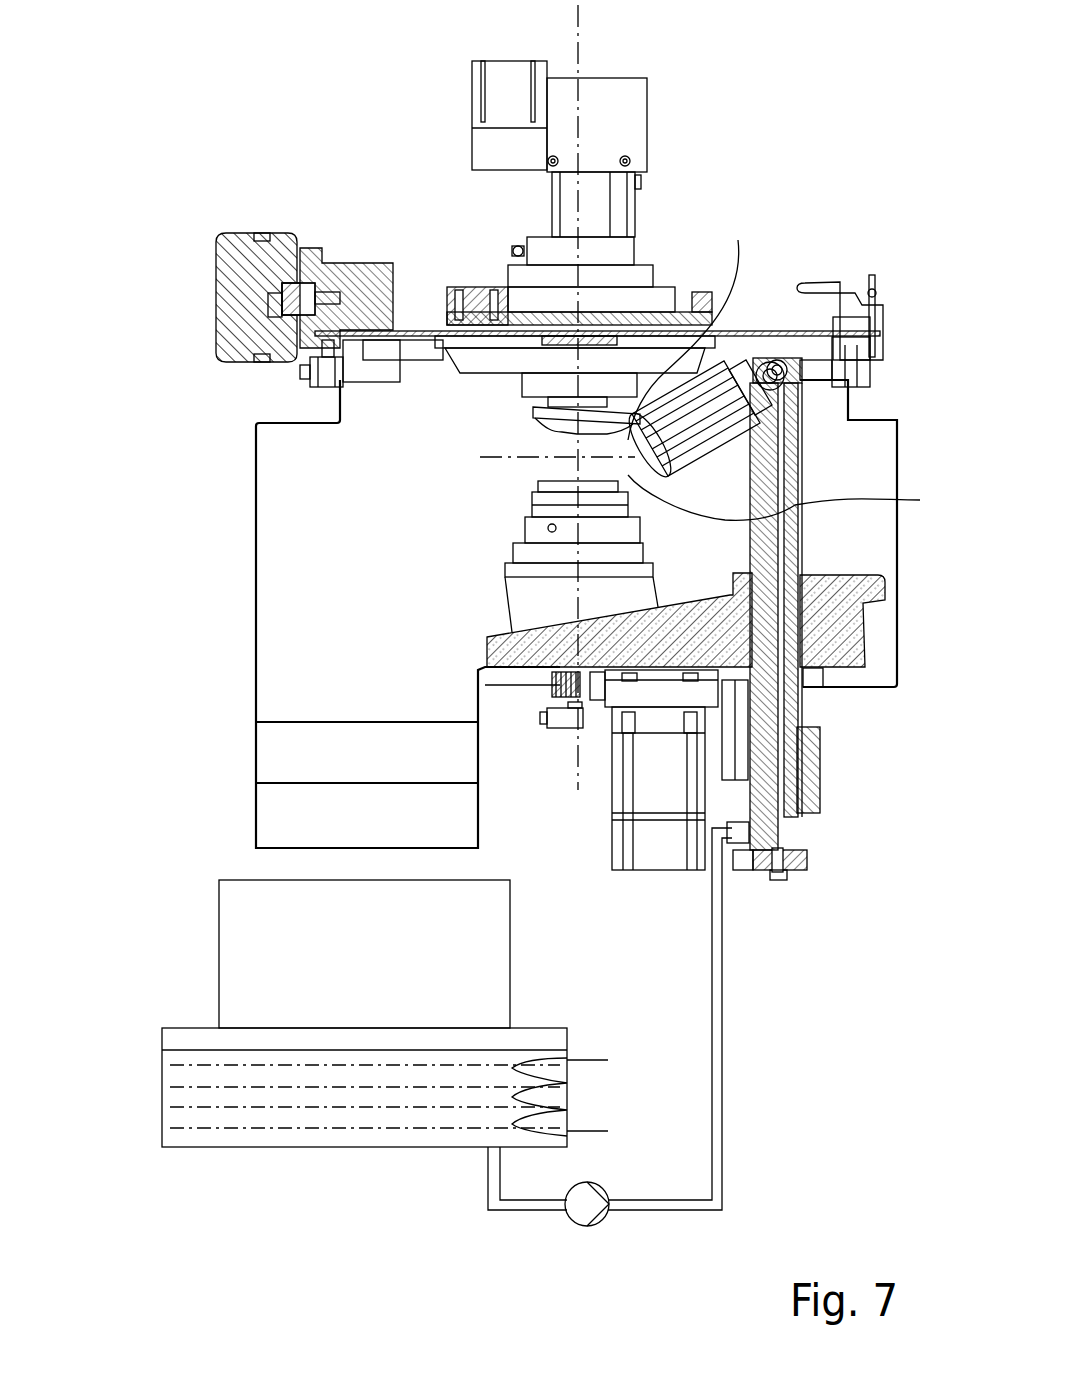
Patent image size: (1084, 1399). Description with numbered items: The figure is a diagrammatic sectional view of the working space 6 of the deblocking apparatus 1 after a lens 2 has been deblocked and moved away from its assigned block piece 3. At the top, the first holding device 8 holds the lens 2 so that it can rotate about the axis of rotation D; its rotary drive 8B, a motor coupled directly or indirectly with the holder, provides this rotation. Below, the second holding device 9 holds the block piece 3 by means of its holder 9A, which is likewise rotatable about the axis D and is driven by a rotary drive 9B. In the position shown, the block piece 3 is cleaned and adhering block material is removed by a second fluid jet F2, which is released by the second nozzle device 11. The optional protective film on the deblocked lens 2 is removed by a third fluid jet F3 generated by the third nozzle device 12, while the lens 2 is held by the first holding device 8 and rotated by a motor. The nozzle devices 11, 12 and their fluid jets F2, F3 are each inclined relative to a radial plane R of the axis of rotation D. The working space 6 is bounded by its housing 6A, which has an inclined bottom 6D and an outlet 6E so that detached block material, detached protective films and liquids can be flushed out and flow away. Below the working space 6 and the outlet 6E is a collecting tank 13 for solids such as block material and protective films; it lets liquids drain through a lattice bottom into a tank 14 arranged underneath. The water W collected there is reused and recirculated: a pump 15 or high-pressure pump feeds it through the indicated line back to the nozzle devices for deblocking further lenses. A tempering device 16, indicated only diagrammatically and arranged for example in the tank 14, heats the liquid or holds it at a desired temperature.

The apparatus 1 is at (176, 177).
The lens 2 is at (567, 411).
The block piece 3 is at (540, 487).
The working space 6 is at (401, 605).
The housing 6A is at (897, 442).
The inclined bottom 6D is at (650, 605).
The outlet 6E is at (310, 752).
The first holding device 8 is at (540, 207).
The rotary drive 8B is at (490, 147).
The second holding device 9 is at (495, 555).
The holder 9A is at (540, 513).
The rotary drive 9B is at (653, 790).
The second nozzle device 11 is at (690, 400).
The third nozzle device 12 is at (757, 453).
The collecting tank 13 is at (220, 993).
The tank 14 is at (163, 1100).
The pump 15 is at (575, 1209).
The tempering device 16 is at (590, 1060).
The axis of rotation D is at (585, 12).
The radial plane R is at (480, 457).
The water W is at (318, 1128).
The second fluid jet F2 is at (787, 497).
The third fluid jet F3 is at (690, 321).